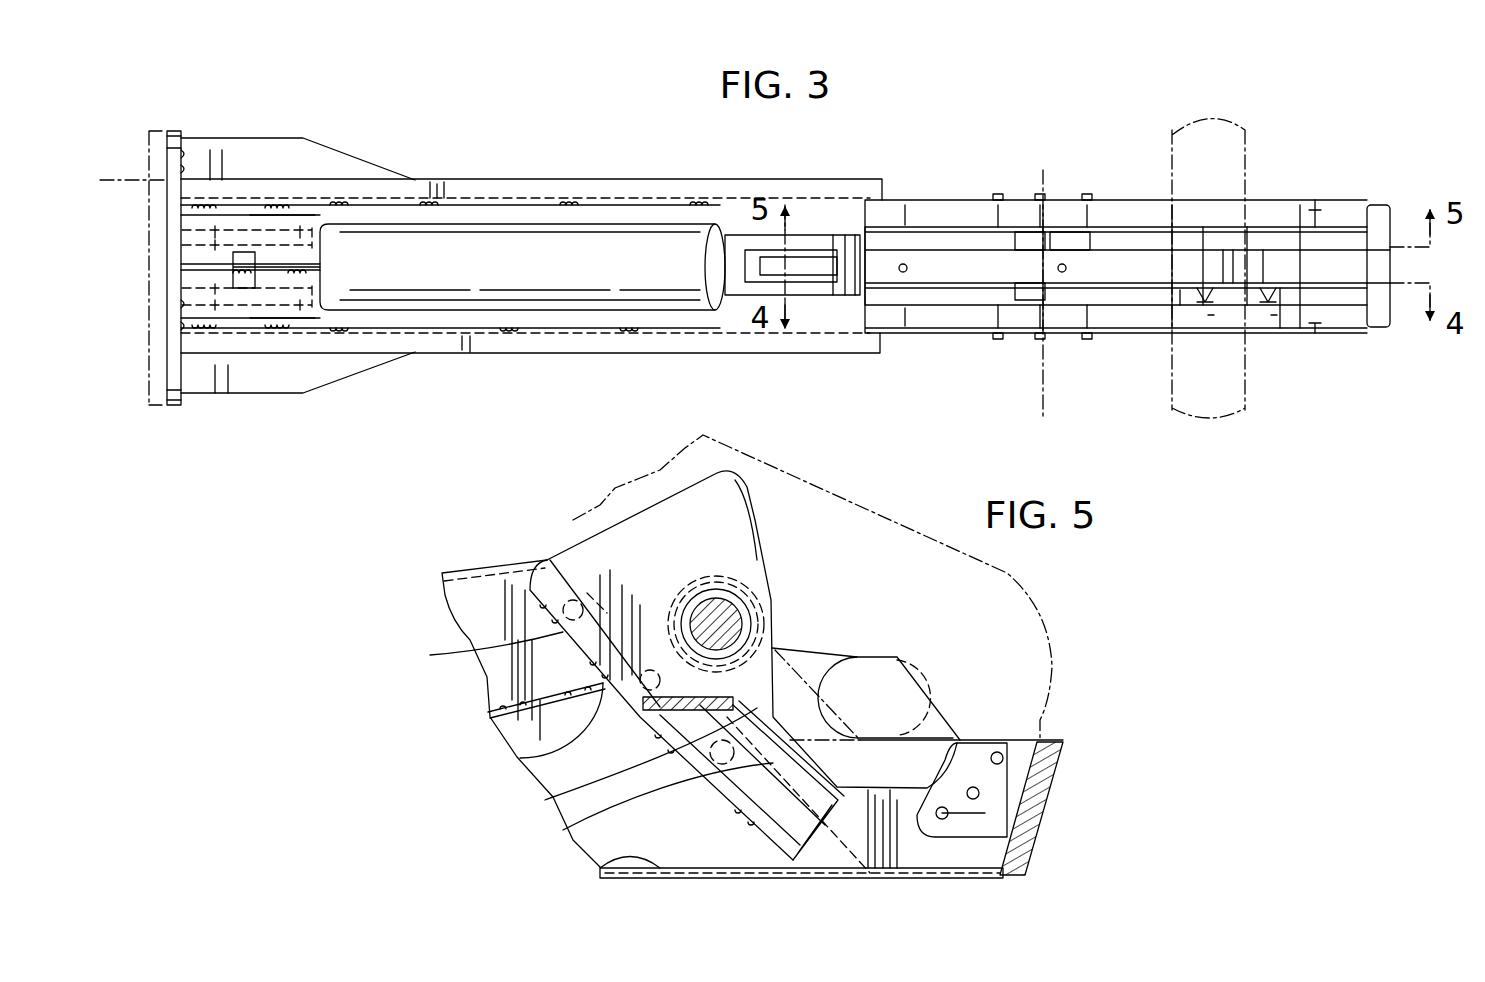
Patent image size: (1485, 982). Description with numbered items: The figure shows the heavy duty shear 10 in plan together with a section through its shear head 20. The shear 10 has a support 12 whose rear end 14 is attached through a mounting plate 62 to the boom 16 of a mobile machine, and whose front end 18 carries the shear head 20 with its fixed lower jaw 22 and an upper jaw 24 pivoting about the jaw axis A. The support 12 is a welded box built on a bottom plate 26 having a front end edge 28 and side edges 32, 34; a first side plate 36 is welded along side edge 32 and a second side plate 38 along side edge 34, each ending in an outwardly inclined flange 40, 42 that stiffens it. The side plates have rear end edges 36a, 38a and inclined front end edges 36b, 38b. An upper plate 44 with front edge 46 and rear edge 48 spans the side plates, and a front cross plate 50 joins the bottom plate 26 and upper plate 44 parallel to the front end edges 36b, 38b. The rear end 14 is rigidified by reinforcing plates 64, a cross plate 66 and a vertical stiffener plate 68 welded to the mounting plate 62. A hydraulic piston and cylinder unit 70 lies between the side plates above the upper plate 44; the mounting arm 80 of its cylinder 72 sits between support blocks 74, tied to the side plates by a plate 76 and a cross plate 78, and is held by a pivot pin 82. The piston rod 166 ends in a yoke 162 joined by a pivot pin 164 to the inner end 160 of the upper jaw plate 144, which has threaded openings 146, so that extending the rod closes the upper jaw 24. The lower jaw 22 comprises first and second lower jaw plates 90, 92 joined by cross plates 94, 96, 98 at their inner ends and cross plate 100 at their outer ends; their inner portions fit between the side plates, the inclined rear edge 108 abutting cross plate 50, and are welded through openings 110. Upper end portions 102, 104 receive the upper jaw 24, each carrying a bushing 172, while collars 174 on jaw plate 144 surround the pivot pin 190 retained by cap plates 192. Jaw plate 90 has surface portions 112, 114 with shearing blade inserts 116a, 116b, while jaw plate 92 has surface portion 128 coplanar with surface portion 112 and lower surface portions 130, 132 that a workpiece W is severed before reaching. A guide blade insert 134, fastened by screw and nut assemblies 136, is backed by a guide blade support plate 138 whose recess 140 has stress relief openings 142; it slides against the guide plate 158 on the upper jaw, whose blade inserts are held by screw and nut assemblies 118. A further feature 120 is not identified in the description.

In FIG. 3, the heavy duty shear 10 is at (960, 128).
In FIG. 3, the support 12 is at (608, 150).
In FIG. 3, the rear end 14 is at (208, 136).
In FIG. 3, the boom 16 is at (112, 176).
In FIG. 3, the front end 18 is at (909, 198).
In FIG. 3, the shear head 20 is at (1125, 213).
In FIG. 5, the shear head 20 is at (895, 505).
In FIG. 3, the lower jaw 22 is at (1362, 332).
In FIG. 5, the lower jaw 22 is at (1030, 870).
In FIG. 3, the upper jaw 24 is at (1352, 266).
In FIG. 5, the upper jaw 24 is at (1050, 627).
In FIG. 5, the bottom plate 26 is at (605, 870).
In FIG. 5, the front end edge 28 is at (800, 878).
In FIG. 3, the side edge 32 is at (453, 332).
In FIG. 3, the side edge 34 is at (500, 206).
In FIG. 3, the first side plate 36 is at (608, 335).
In FIG. 3, the rear end edge 36a is at (185, 325).
In FIG. 3, the inclined front end edge 36b is at (985, 345).
In FIG. 3, the second side plate 38 is at (592, 200).
In FIG. 5, the second side plate 38 is at (472, 594).
In FIG. 3, the rear end edge 38a is at (185, 203).
In FIG. 3, the inclined front end edge 38b is at (975, 200).
In FIG. 5, the inclined front end edge 38b is at (575, 590).
In FIG. 3, the flange 40 is at (545, 345).
In FIG. 3, the flange 42 is at (461, 186).
In FIG. 5, the flange 42 is at (478, 573).
In FIG. 3, the upper plate 44 is at (680, 215).
In FIG. 5, the upper plate 44 is at (515, 702).
In FIG. 5, the front edge 46 is at (513, 757).
In FIG. 3, the rear edge 48 is at (303, 393).
In FIG. 3, the front cross plate 50 is at (958, 300).
In FIG. 5, the front cross plate 50 is at (580, 826).
In FIG. 3, the mounting plate 62 is at (173, 130).
In FIG. 3, the reinforcing plates 64 is at (302, 190).
In FIG. 3, the cross plate 66 is at (283, 205).
In FIG. 3, the vertical stiffener plate 68 is at (253, 265).
In FIG. 3, the hydraulic piston and cylinder unit 70 is at (663, 312).
In FIG. 3, the cylinder 72 is at (497, 297).
In FIG. 3, the support blocks 74 is at (335, 170).
In FIG. 3, the laterally extending plate 76 is at (235, 200).
In FIG. 3, the cross plate 78 is at (305, 337).
In FIG. 3, the mounting arm 80 is at (336, 246).
In FIG. 3, the pivot pin 82 is at (250, 332).
In FIG. 3, the first lower jaw plate 90 is at (1352, 332).
In FIG. 3, the second lower jaw plate 92 is at (1330, 235).
In FIG. 5, the second lower jaw plate 92 is at (1035, 860).
In FIG. 5, the cross plate 94 is at (590, 765).
In FIG. 5, the cross plate 96 is at (720, 790).
In FIG. 5, the cross plate 98 is at (745, 878).
In FIG. 3, the cross plate 100 is at (1380, 215).
In FIG. 5, the cross plate 100 is at (1060, 760).
In FIG. 3, the upper end portion 102 is at (925, 318).
In FIG. 3, the upper end portion 104 is at (958, 205).
In FIG. 5, the upper end portion 104 is at (740, 510).
In FIG. 5, the inclined rear edge 108 is at (515, 643).
In FIG. 5, the openings 110 is at (530, 560).
In FIG. 3, the surface portion 112 is at (1214, 312).
In FIG. 5, the surface portion 112 is at (1048, 690).
In FIG. 3, the surface portion 114 is at (1180, 312).
In FIG. 5, the surface portion 114 is at (810, 700).
In FIG. 3, the shearing blade insert 116a is at (1262, 335).
In FIG. 3, the shearing blade insert 116b is at (1170, 205).
In FIG. 3, the machine screw and nut assemblies 118 is at (1282, 340).
In FIG. 3, the clamp edge 120 is at (1378, 330).
In FIG. 3, the upper surface portion 128 is at (1355, 240).
In FIG. 5, the upper surface portion 128 is at (1050, 735).
In FIG. 3, the upper surface portion 130 is at (1235, 215).
In FIG. 5, the upper surface portion 130 is at (923, 740).
In FIG. 3, the upper surface portion 132 is at (1155, 212).
In FIG. 5, the upper surface portion 132 is at (800, 740).
In FIG. 3, the guide blade insert 134 is at (1345, 230).
In FIG. 5, the guide blade insert 134 is at (1042, 725).
In FIG. 3, the machine screw and nut assemblies 136 is at (1322, 203).
In FIG. 5, the machine screw and nut assemblies 136 is at (1050, 785).
In FIG. 3, the guide blade support plate 138 is at (1370, 250).
In FIG. 5, the guide blade support plate 138 is at (1010, 830).
In FIG. 5, the recess 140 is at (1005, 790).
In FIG. 5, the stress relief openings 142 is at (915, 840).
In FIG. 3, the upper jaw plate 144 is at (1150, 290).
In FIG. 5, the upper jaw plate 144 is at (1000, 572).
In FIG. 3, the threaded openings 146 is at (903, 272).
In FIG. 3, the guide plate 158 is at (1270, 230).
In FIG. 3, the inner end 160 is at (850, 240).
In FIG. 3, the yoke 162 is at (793, 248).
In FIG. 3, the pivot pin 164 is at (812, 297).
In FIG. 3, the piston rod 166 is at (722, 245).
In FIG. 5, the steel bushing 172 is at (695, 598).
In FIG. 3, the steel collar 174 is at (1072, 240).
In FIG. 3, the pivot pin 190 is at (1020, 198).
In FIG. 5, the pivot pin 190 is at (740, 615).
In FIG. 3, the steel cap plates 192 is at (1045, 196).
In FIG. 5, the steel cap plates 192 is at (735, 580).
In FIG. 3, the jaw axis A is at (1040, 400).
In FIG. 5, the jaw axis A is at (730, 615).
In FIG. 3, the workpiece W is at (1242, 128).
In FIG. 5, the workpiece W is at (905, 690).